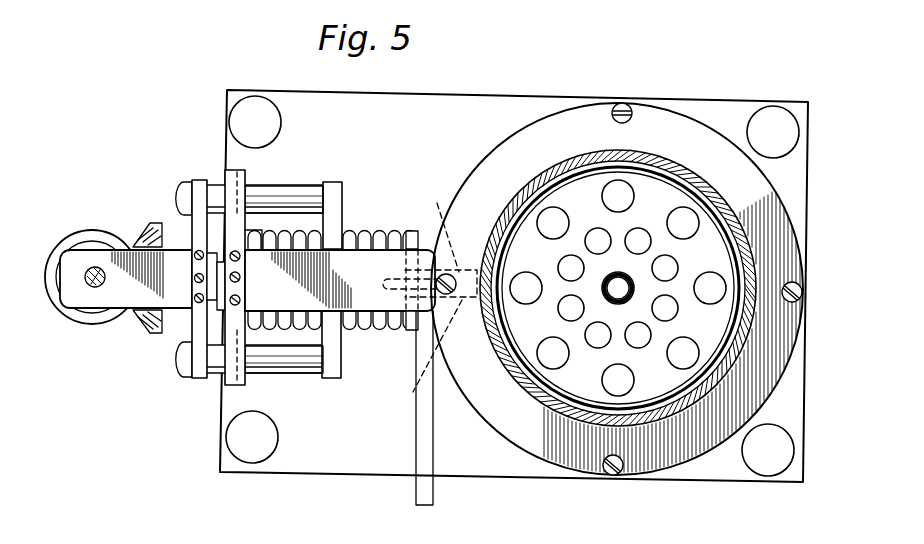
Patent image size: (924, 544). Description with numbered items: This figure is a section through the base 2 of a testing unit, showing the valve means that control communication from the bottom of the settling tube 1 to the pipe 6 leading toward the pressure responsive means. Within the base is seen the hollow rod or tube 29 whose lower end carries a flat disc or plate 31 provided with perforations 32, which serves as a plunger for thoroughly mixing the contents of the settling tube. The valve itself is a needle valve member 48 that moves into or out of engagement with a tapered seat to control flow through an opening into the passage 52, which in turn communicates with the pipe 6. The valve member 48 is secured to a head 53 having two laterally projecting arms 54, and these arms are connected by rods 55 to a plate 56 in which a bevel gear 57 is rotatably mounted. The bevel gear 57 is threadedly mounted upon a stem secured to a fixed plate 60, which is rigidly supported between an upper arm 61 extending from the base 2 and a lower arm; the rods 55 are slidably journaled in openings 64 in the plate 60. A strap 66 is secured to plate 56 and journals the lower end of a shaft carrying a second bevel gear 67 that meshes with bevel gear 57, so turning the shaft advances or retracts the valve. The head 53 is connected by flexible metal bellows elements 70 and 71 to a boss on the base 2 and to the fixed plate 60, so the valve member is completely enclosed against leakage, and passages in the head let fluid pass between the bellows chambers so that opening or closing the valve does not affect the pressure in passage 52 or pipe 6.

The settling tube 1 is at (573, 415).
The base 2 is at (775, 358).
The pipe 6 is at (428, 500).
The hollow rod or tube 29 is at (603, 286).
The flat disc or plate 31 is at (527, 217).
The perforations 32 is at (612, 377).
The needle valve member 48 is at (412, 390).
The passage 52 is at (436, 210).
The head 53 is at (332, 240).
The laterally projecting arms 54 is at (326, 186).
The rods 55 is at (283, 192).
The plate 56 is at (196, 318).
The bevel gear 57 is at (157, 238).
The plate 60 is at (219, 314).
The upper arm 61 is at (345, 306).
The openings 64 is at (237, 185).
The strap 66 is at (133, 298).
The second bevel gear 67 is at (53, 285).
The flexible metal bellows element 70 is at (388, 246).
The flexible metal bellows element 71 is at (265, 236).